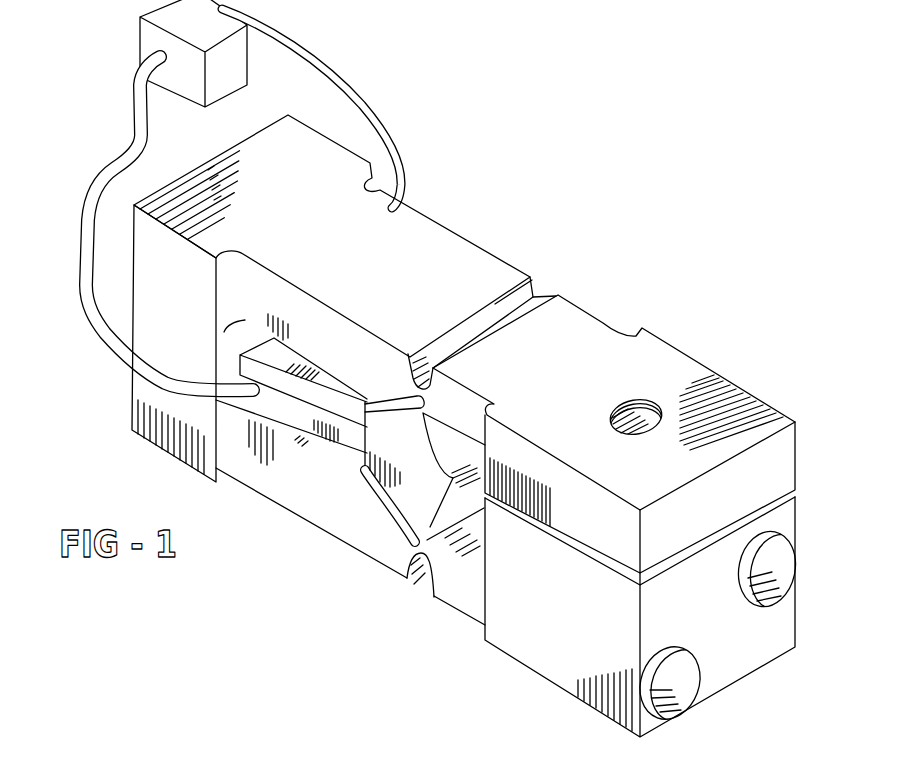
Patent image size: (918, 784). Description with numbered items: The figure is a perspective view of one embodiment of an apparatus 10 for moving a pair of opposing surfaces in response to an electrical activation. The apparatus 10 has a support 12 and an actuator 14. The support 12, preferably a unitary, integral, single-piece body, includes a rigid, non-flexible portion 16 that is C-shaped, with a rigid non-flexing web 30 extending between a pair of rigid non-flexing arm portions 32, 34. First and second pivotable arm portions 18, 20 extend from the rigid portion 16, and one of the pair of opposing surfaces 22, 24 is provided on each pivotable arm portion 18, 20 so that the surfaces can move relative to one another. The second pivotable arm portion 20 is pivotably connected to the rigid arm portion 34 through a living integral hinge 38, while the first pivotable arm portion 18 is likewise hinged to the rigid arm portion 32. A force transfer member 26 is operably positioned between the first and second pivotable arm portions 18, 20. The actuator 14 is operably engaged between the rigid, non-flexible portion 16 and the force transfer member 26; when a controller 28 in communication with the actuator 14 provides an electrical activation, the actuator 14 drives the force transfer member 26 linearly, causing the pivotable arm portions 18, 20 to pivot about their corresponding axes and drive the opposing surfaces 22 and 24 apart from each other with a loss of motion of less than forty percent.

The apparatus 10 is at (698, 140).
The support 12 is at (405, 230).
The actuator 14 is at (292, 383).
The rigid, non-flexible portion 16 is at (168, 305).
The first pivotable arm portion 18 is at (655, 353).
The second pivotable arm portion 20 is at (530, 658).
The opposing surface 22 is at (553, 530).
The opposing surface 24 is at (590, 550).
The force transfer member 26 is at (413, 488).
The controller 28 is at (207, 2).
The rigid non-flexing web 30 is at (167, 355).
The rigid non-flexing arm portion 32 is at (480, 273).
The rigid non-flexing arm portion 34 is at (243, 470).
The living integral hinge 38 is at (410, 578).